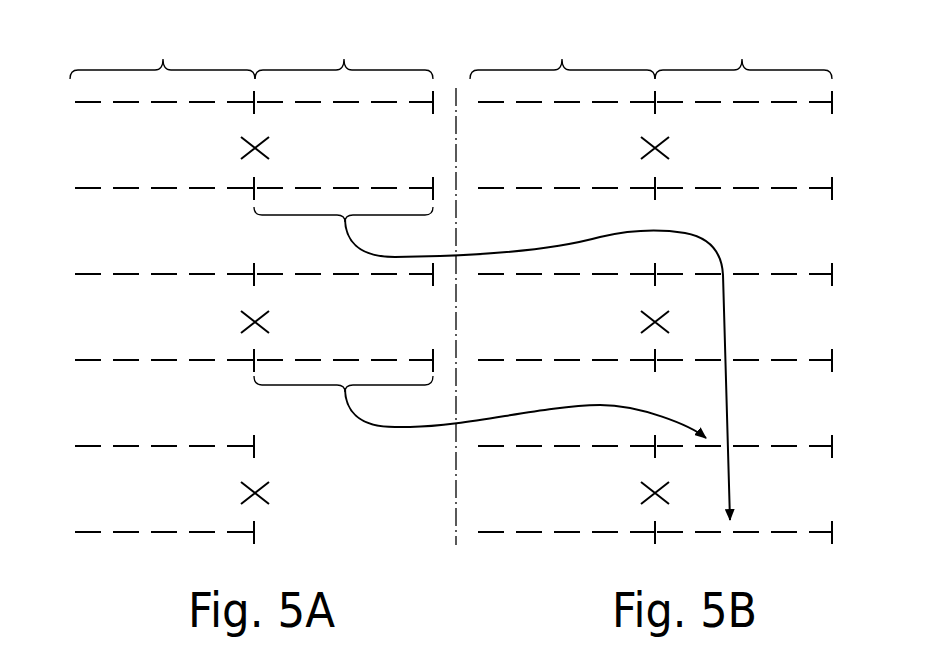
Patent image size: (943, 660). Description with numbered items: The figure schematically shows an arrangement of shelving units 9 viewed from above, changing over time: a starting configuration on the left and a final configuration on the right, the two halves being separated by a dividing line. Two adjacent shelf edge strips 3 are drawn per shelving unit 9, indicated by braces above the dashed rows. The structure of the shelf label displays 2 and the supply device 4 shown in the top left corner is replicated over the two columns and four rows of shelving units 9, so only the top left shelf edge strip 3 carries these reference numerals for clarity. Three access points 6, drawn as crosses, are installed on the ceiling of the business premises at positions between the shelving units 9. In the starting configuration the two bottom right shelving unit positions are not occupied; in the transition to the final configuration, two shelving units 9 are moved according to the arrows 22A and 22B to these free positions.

In FIG. 5A, the shelf label display 2 is at (90, 105).
In FIG. 5A, the shelf edge strip 3 is at (251, 51).
In FIG. 5B, the shelf edge strip 3 is at (651, 51).
In FIG. 5A, the supply device 4 is at (256, 114).
In FIG. 5A, the access point 6 is at (257, 150).
In FIG. 5B, the access point 6 is at (648, 148).
In FIG. 5A, the shelving unit 9 is at (68, 106).
In FIG. 5B, the shelving unit 9 is at (846, 109).
In FIG. 5B, the arrow 22A is at (570, 247).
In FIG. 5A, the arrow 22B is at (400, 428).